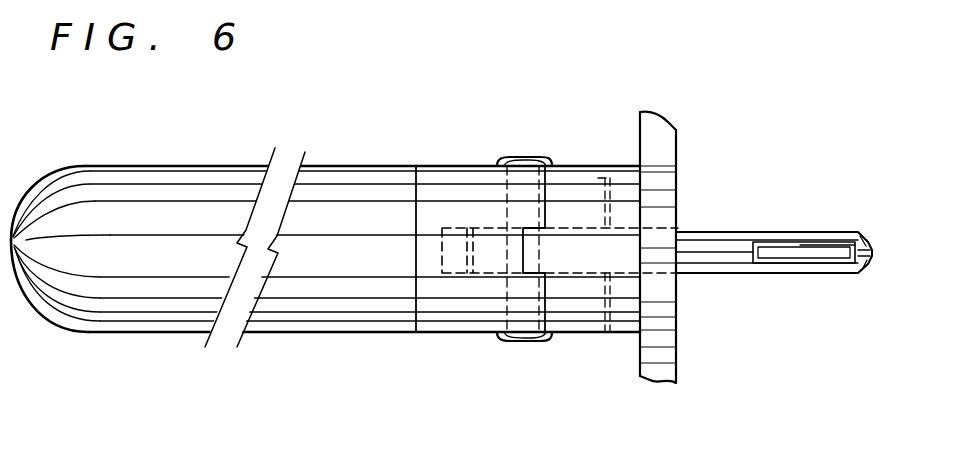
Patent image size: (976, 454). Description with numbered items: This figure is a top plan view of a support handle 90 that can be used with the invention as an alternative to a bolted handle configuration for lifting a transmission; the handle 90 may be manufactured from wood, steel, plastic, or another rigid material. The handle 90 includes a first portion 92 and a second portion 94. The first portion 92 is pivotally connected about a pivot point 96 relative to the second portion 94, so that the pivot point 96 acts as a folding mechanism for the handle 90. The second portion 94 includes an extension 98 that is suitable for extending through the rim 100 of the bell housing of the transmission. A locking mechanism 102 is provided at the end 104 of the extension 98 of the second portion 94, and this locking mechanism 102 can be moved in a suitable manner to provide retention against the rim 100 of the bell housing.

The handle 90 is at (442, 138).
The first portion 92 is at (323, 322).
The second portion 94 is at (622, 333).
The pivot point 96 is at (522, 343).
The extension 98 is at (723, 237).
The rim 100 is at (677, 158).
The locking mechanism 102 is at (822, 240).
The end 104 is at (873, 263).